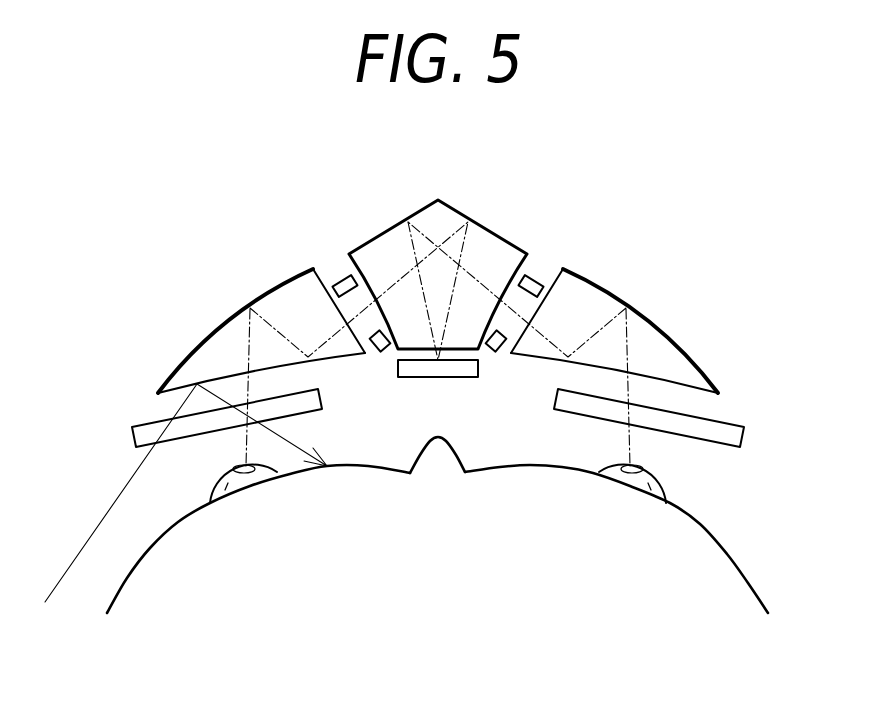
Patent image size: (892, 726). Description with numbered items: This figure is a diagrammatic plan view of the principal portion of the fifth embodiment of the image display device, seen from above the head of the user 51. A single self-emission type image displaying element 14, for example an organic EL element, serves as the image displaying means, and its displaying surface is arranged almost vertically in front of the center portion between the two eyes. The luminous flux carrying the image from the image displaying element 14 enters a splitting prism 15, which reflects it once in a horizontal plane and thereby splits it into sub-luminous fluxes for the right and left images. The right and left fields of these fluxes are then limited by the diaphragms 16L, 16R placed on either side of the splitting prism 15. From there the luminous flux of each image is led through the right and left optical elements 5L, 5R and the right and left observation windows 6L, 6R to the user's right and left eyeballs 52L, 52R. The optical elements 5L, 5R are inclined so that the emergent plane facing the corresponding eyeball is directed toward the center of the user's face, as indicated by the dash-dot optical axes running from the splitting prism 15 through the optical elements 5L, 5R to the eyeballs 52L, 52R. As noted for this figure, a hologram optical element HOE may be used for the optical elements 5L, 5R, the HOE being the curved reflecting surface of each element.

The left optical element 5L is at (275, 307).
The right optical element 5R is at (590, 303).
The hologram optical element HOE is at (218, 323).
The splitting prism 15 is at (493, 228).
The left diaphragm 16L is at (342, 278).
The right diaphragm 16R is at (542, 280).
The image displaying element 14 is at (402, 366).
The left observation window 6L is at (155, 434).
The right observation window 6R is at (742, 430).
The left eyeball 52L is at (217, 510).
The right eyeball 52R is at (653, 480).
The user 51 is at (730, 560).